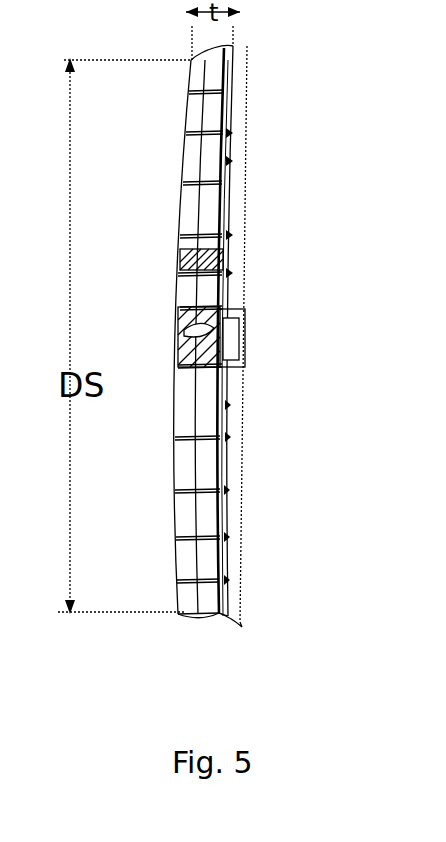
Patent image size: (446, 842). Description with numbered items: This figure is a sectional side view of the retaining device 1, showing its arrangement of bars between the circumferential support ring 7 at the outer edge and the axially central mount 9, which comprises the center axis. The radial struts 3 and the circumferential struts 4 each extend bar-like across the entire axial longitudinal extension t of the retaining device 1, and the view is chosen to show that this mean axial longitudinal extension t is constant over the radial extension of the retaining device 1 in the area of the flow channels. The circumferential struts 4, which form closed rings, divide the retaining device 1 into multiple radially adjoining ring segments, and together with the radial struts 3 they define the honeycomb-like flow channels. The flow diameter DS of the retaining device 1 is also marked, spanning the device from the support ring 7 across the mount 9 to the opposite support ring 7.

The retaining device 1 is at (258, 126).
The radial struts 3 is at (223, 199).
The circumferential struts 4 is at (178, 438).
The support ring 7 is at (213, 613).
The mount 9 is at (158, 331).